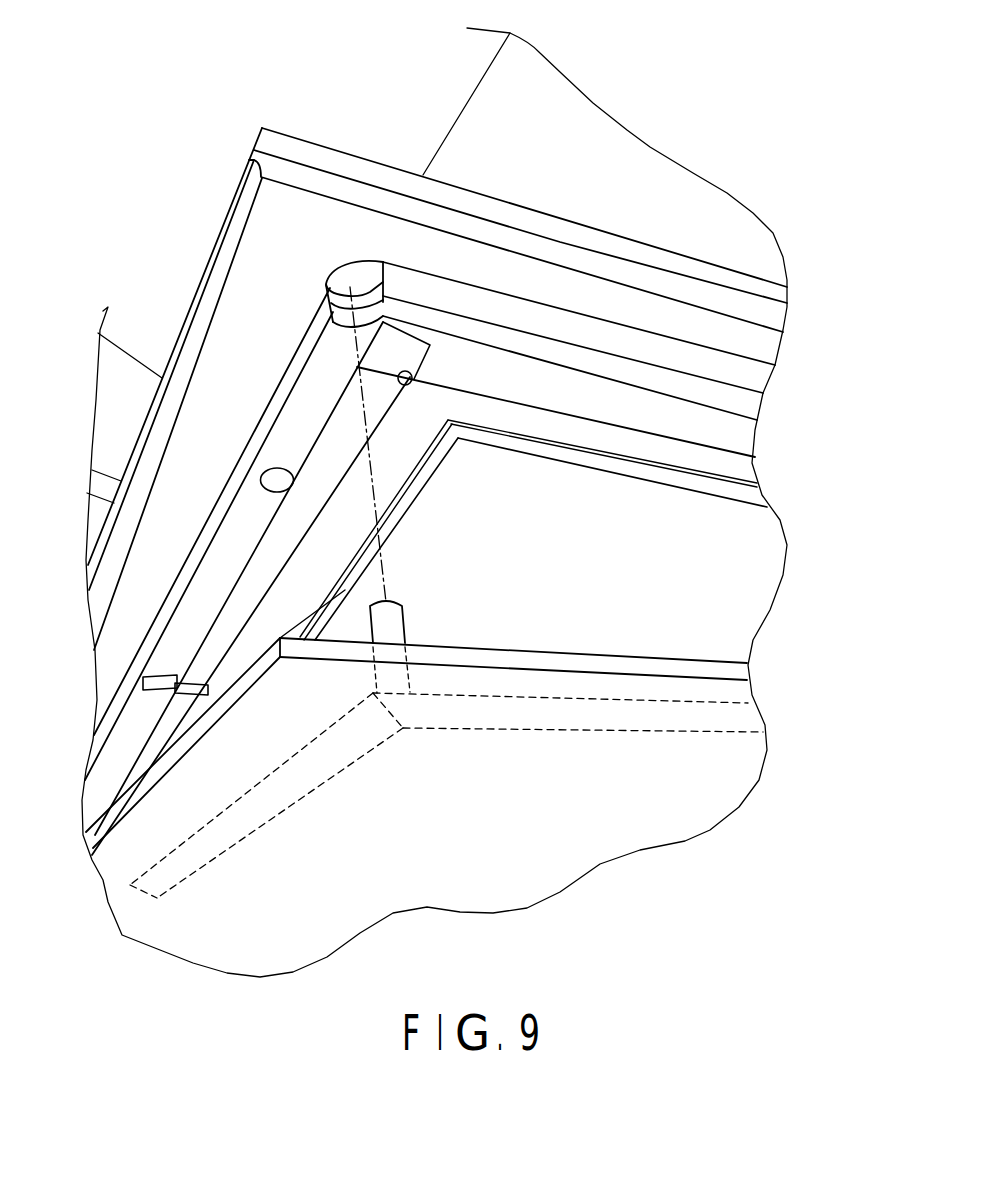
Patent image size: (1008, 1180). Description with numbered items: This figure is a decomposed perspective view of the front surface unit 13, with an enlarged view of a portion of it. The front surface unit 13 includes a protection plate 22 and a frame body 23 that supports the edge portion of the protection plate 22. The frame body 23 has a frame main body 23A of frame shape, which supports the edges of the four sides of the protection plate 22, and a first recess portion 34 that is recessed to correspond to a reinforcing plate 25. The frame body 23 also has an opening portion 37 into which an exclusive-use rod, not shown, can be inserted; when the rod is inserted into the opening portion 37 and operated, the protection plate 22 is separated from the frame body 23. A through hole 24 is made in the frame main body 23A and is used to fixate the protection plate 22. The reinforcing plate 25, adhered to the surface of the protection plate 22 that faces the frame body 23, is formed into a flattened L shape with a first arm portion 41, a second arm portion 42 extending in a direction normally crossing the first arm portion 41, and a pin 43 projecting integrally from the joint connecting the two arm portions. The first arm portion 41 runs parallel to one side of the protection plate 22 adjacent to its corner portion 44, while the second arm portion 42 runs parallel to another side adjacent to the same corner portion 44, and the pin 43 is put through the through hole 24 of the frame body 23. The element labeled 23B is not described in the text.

The front surface unit 13 is at (403, 112).
The protection plate 22 is at (456, 744).
The frame body 23 is at (483, 389).
The frame main body 23A is at (780, 297).
The top face of upper frame 23B is at (597, 230).
The through hole 24 is at (331, 278).
The reinforcing plate 25 is at (392, 490).
The first recess portion 34 is at (240, 612).
The opening portion 37 is at (270, 481).
The first arm portion 41 is at (610, 700).
The second arm portion 42 is at (183, 842).
The pin 43 is at (365, 635).
The corner portion 44 is at (282, 658).